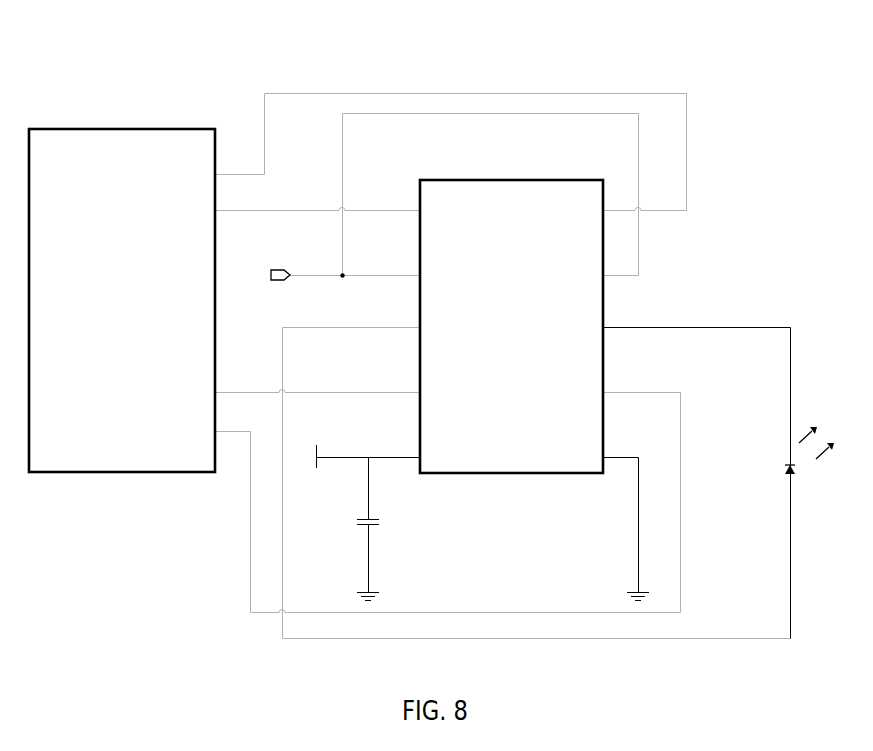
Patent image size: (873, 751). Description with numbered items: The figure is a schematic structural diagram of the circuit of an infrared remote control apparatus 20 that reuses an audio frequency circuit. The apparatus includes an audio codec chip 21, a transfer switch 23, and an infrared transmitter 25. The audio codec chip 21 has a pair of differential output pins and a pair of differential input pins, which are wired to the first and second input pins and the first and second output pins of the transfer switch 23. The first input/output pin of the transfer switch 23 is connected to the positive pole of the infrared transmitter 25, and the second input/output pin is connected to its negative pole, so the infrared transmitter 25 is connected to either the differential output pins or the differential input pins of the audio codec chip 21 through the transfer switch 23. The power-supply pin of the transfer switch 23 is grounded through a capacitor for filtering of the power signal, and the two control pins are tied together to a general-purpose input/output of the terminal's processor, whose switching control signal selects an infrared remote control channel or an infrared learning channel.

The infrared remote control apparatus 20 is at (391, 46).
The audio codec chip 21 is at (105, 128).
The transfer switch 23 is at (475, 180).
The infrared transmitter 25 is at (788, 465).